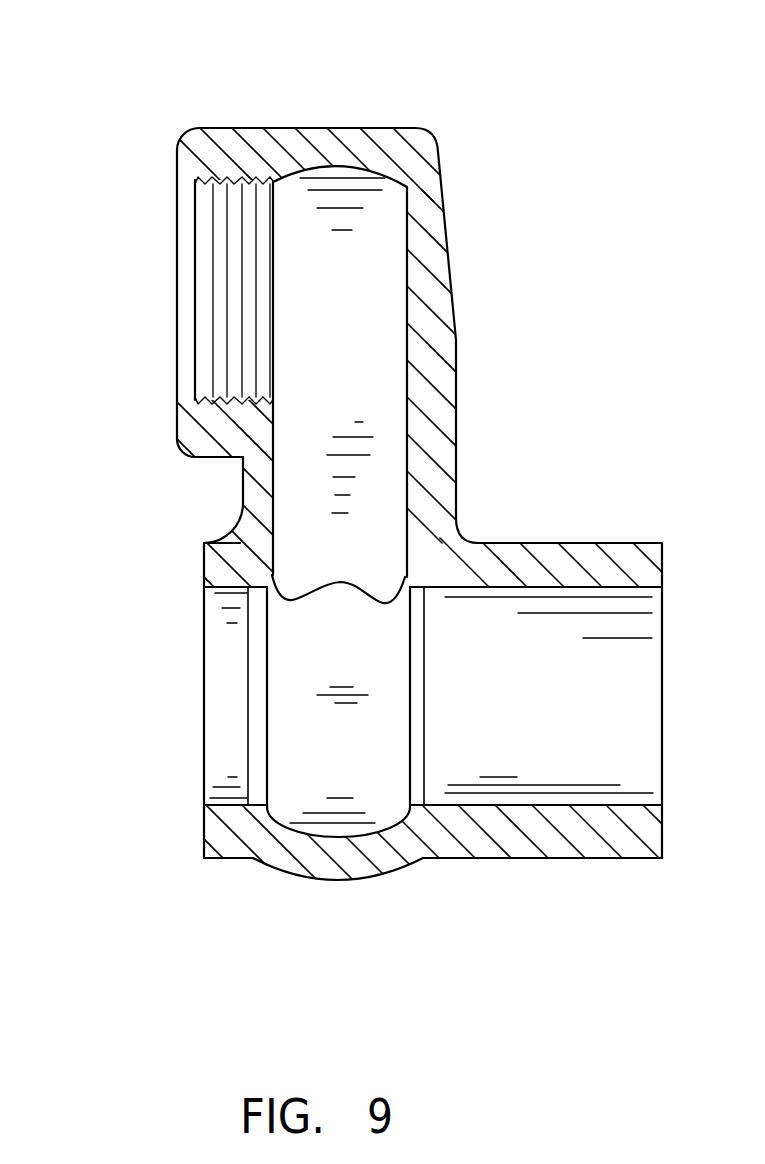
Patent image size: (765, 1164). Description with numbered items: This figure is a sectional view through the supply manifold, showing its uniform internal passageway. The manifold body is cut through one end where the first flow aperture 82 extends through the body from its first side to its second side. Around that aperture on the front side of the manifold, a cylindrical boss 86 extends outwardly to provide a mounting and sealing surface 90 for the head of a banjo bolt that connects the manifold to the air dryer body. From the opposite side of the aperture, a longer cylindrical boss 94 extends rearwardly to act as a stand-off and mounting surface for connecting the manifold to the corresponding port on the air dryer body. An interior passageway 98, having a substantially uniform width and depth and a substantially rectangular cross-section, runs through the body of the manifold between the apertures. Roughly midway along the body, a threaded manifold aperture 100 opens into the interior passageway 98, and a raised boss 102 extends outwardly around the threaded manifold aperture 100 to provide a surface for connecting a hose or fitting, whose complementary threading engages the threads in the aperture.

The first flow aperture 82 is at (220, 697).
The cylindrical boss 86 is at (223, 857).
The mounting and sealing surface 90 is at (200, 832).
The longer cylindrical boss 94 is at (588, 550).
The interior passageway 98 is at (340, 353).
The threaded manifold aperture 100 is at (205, 312).
The raised boss 102 is at (238, 147).